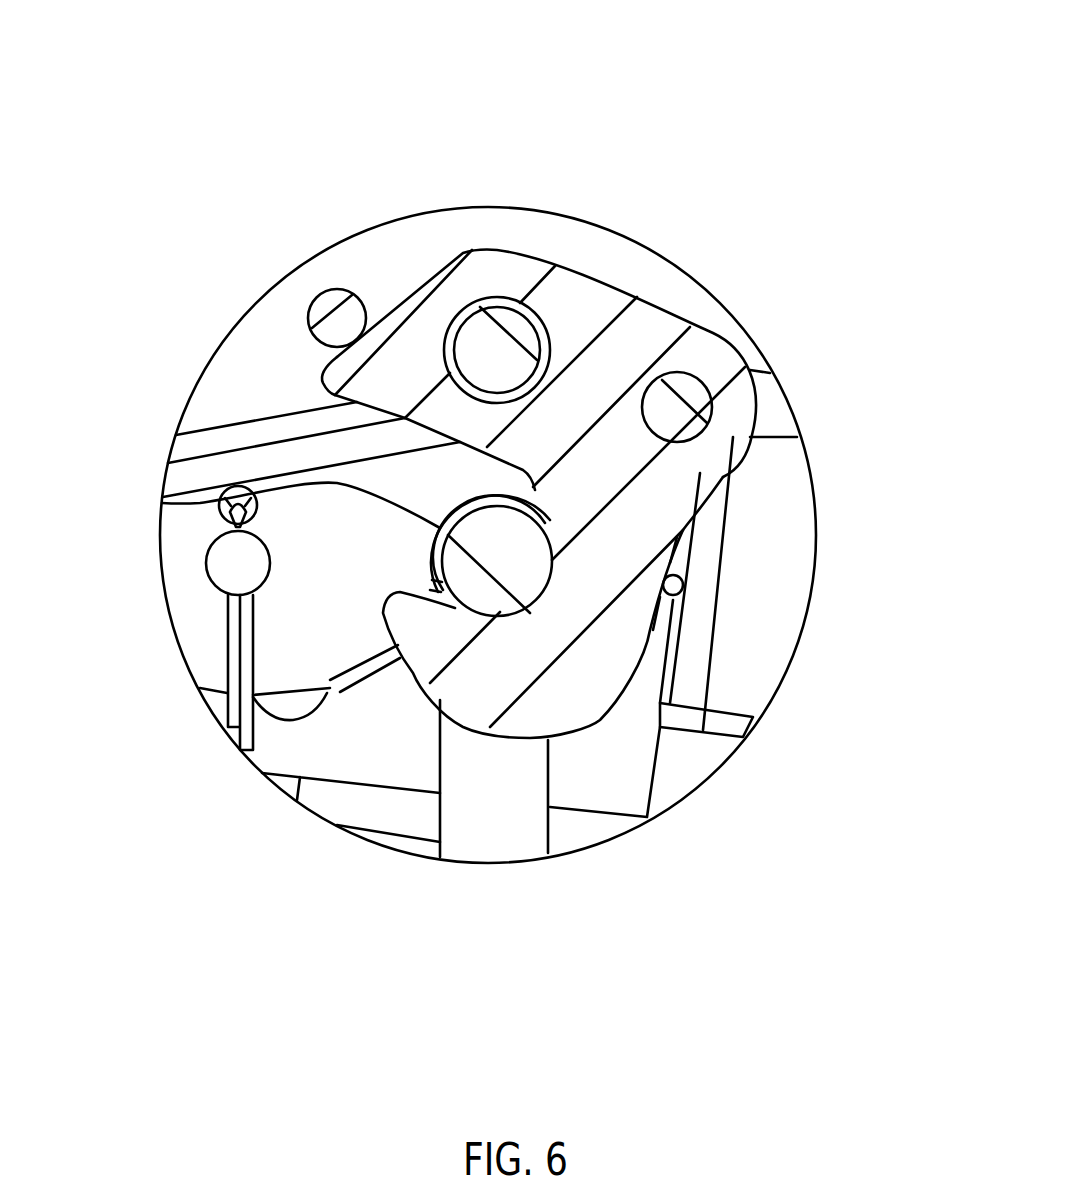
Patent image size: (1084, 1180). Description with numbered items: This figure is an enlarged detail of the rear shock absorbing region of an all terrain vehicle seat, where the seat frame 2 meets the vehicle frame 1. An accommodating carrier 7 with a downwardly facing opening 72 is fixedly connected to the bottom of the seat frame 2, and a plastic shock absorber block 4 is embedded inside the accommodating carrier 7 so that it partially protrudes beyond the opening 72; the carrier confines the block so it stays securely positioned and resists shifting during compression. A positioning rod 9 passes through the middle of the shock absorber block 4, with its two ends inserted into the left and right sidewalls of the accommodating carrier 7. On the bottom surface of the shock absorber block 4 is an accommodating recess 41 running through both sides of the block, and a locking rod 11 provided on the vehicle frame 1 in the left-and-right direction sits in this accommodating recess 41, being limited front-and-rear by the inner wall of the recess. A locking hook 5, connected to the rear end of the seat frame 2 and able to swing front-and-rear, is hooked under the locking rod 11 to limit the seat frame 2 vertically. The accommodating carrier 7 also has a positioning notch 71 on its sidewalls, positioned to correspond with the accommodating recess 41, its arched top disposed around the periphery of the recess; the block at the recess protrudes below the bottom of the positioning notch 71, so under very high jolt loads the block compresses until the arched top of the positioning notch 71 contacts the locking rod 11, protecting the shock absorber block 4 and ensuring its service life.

The vehicle frame 1 is at (387, 813).
The seat frame 2 is at (300, 397).
The shock absorber block 4 is at (220, 503).
The locking hook 5 is at (608, 365).
The accommodating carrier 7 is at (325, 608).
The positioning notch 71 is at (460, 608).
The opening 72 is at (348, 677).
The positioning rod 9 is at (243, 567).
The locking rod 11 is at (508, 563).
The accommodating recess 41 is at (548, 520).